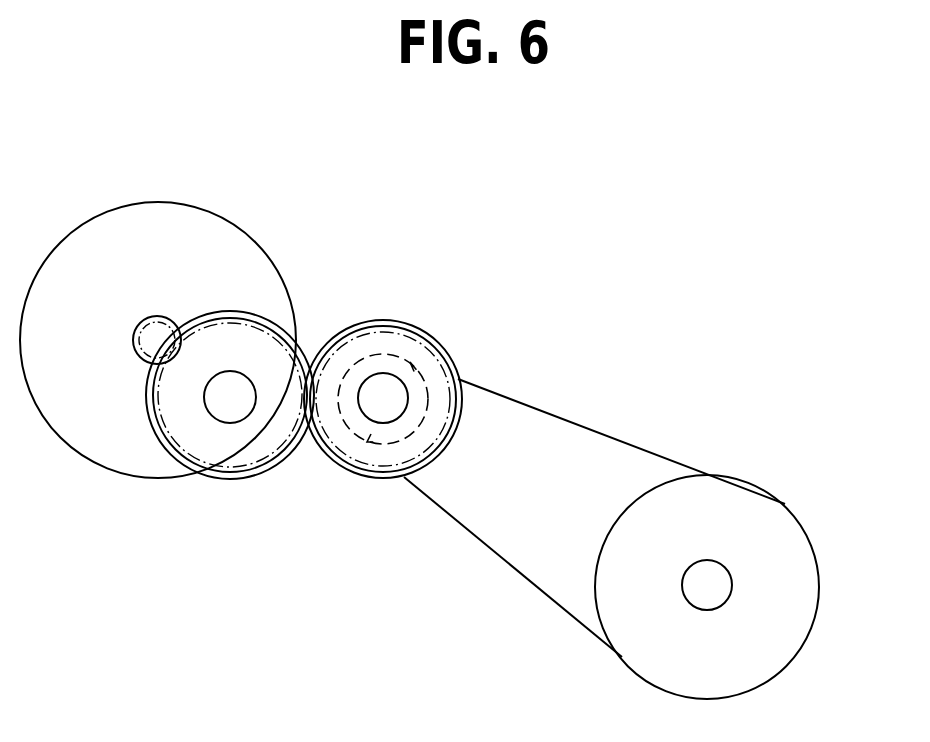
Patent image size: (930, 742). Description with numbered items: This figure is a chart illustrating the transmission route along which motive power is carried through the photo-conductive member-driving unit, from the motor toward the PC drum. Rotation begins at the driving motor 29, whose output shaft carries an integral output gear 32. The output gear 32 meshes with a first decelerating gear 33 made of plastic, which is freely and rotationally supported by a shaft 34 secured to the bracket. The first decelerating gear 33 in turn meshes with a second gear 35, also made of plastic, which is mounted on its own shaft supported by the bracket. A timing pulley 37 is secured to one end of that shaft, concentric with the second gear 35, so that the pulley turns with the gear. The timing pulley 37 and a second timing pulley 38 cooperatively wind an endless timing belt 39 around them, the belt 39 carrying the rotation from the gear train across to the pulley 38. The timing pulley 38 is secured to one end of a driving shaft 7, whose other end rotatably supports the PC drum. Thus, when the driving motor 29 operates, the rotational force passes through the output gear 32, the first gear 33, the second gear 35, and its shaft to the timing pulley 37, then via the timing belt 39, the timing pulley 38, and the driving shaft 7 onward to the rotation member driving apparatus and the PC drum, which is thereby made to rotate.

The driving motor 29 is at (193, 221).
The output gear 32 is at (171, 320).
The first decelerating gear 33 is at (258, 477).
The shaft 34 is at (226, 416).
The second gear 35 is at (340, 462).
The timing pulley 37 is at (390, 357).
The timing pulley 38 is at (773, 518).
The endless timing belt 39 is at (602, 430).
The driving shaft 7 is at (688, 575).